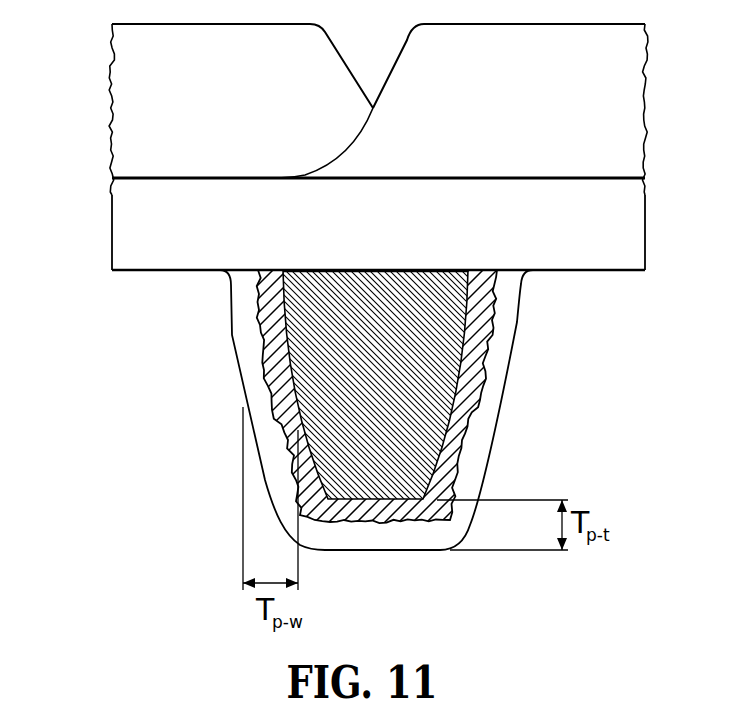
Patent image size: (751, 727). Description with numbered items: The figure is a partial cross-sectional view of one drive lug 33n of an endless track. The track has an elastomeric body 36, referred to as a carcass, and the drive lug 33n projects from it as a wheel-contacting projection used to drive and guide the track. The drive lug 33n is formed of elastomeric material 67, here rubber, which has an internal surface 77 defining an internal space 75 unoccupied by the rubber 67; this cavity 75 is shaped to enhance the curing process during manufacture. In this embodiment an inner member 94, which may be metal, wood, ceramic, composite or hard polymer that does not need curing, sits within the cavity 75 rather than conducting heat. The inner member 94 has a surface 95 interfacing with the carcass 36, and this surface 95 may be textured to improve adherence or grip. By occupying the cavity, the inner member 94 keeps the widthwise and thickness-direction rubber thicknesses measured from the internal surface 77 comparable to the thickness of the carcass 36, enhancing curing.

The elastomeric body 36 is at (156, 225).
The surface 95 is at (421, 270).
The drive lug 33n is at (213, 451).
The inner member 94 is at (404, 351).
The internal space 75 is at (268, 331).
The internal surface 77 is at (455, 375).
The elastomeric material 67 is at (469, 417).